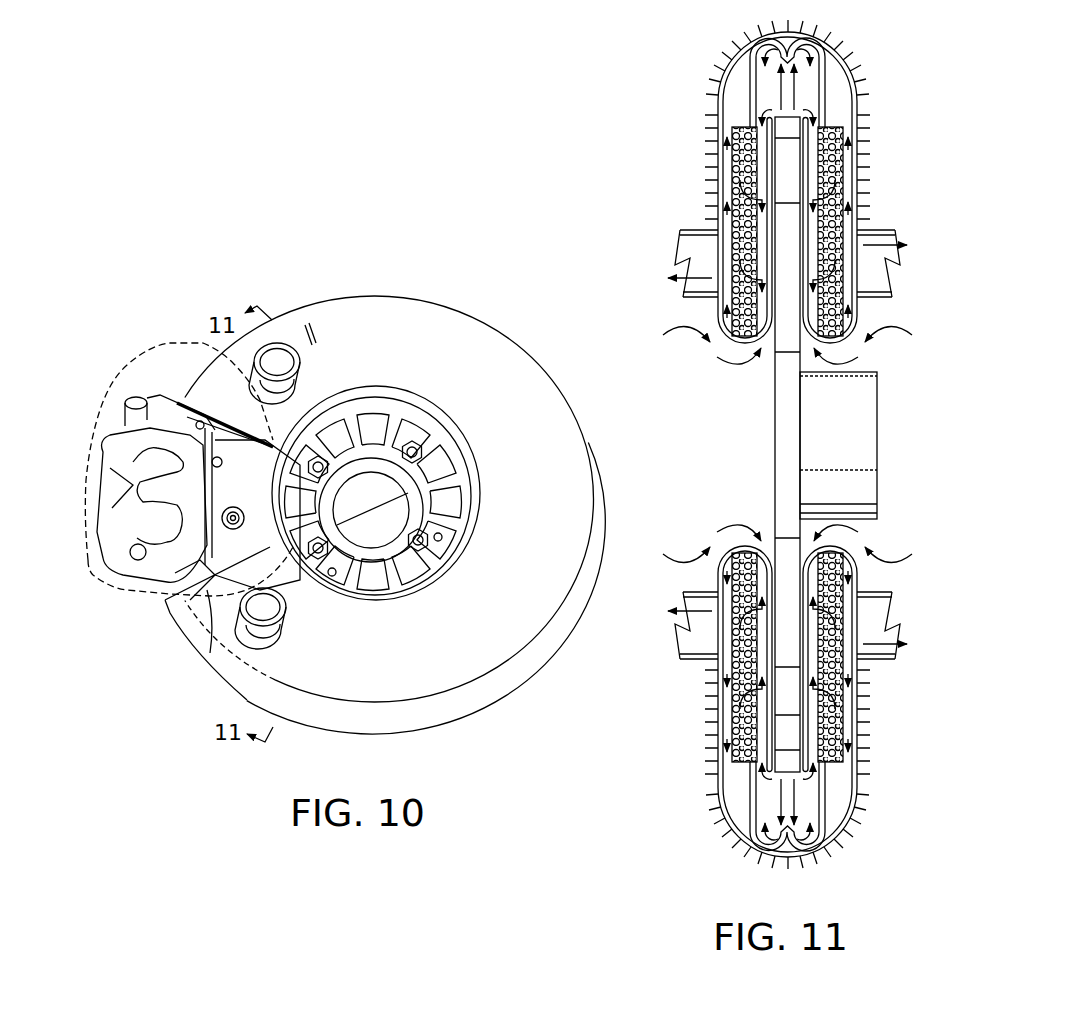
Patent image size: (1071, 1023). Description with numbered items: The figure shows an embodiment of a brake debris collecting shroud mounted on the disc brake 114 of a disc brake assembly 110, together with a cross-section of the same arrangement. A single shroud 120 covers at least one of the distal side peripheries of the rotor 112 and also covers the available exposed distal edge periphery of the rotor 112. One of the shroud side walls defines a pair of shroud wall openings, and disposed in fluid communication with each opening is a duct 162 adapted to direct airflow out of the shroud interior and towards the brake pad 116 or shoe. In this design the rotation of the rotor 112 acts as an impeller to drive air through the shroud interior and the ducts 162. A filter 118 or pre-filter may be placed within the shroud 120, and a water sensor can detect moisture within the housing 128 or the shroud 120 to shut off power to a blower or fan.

In FIG. 10, the disc brake assembly 110 is at (422, 515).
In FIG. 10, the rotor 112 is at (442, 500).
In FIG. 11, the rotor 112 is at (796, 432).
In FIG. 10, the disc brake 114 is at (115, 526).
In FIG. 10, the brake pad 116 is at (196, 660).
In FIG. 11, the filter 118 is at (733, 222).
In FIG. 10, the shroud 120 is at (580, 447).
In FIG. 11, the shroud 120 is at (864, 58).
In FIG. 10, the housing 128 is at (96, 572).
In FIG. 10, the duct 162 is at (290, 342).
In FIG. 11, the duct 162 is at (702, 300).